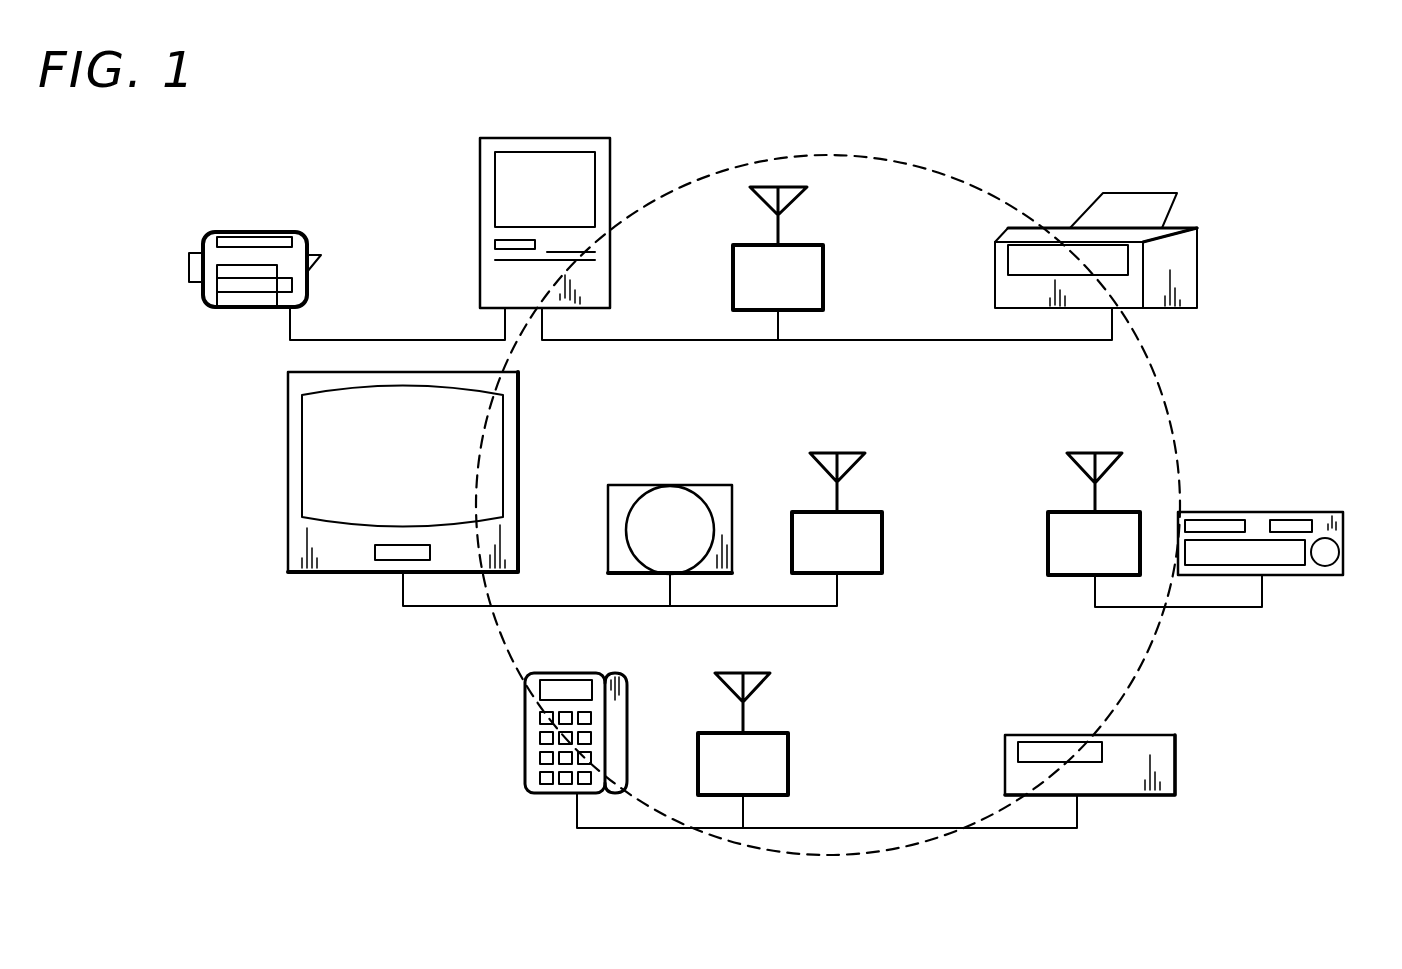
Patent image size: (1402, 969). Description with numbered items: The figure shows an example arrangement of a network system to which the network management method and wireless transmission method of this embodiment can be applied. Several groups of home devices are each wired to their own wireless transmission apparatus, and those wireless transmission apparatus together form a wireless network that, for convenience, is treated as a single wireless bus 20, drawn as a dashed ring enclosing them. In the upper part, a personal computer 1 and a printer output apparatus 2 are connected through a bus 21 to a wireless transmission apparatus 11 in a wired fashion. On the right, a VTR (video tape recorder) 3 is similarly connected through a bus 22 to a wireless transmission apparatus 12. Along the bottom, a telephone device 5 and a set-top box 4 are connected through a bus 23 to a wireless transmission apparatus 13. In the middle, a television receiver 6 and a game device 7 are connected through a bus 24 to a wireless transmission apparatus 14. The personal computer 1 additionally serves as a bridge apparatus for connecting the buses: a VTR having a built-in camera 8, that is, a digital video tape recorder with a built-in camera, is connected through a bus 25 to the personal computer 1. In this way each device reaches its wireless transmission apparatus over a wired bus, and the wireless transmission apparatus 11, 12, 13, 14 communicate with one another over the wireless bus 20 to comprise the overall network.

The personal computer 1 is at (538, 138).
The printer output apparatus 2 is at (1062, 228).
The VTR (video tape recorder) 3 is at (1262, 512).
The set-top box 4 is at (1140, 735).
The telephone device 5 is at (533, 793).
The television receiver 6 is at (322, 572).
The game device 7 is at (630, 485).
The VTR having a built-in camera 8 is at (225, 232).
The wireless transmission apparatus 11 is at (823, 283).
The wireless transmission apparatus 12 is at (1048, 542).
The wireless transmission apparatus 13 is at (788, 733).
The wireless transmission apparatus 14 is at (868, 512).
The wireless bus 20 is at (950, 182).
The bus 21 is at (1038, 342).
The bus 22 is at (1229, 610).
The bus 23 is at (1045, 830).
The bus 24 is at (583, 607).
The bus 25 is at (390, 340).